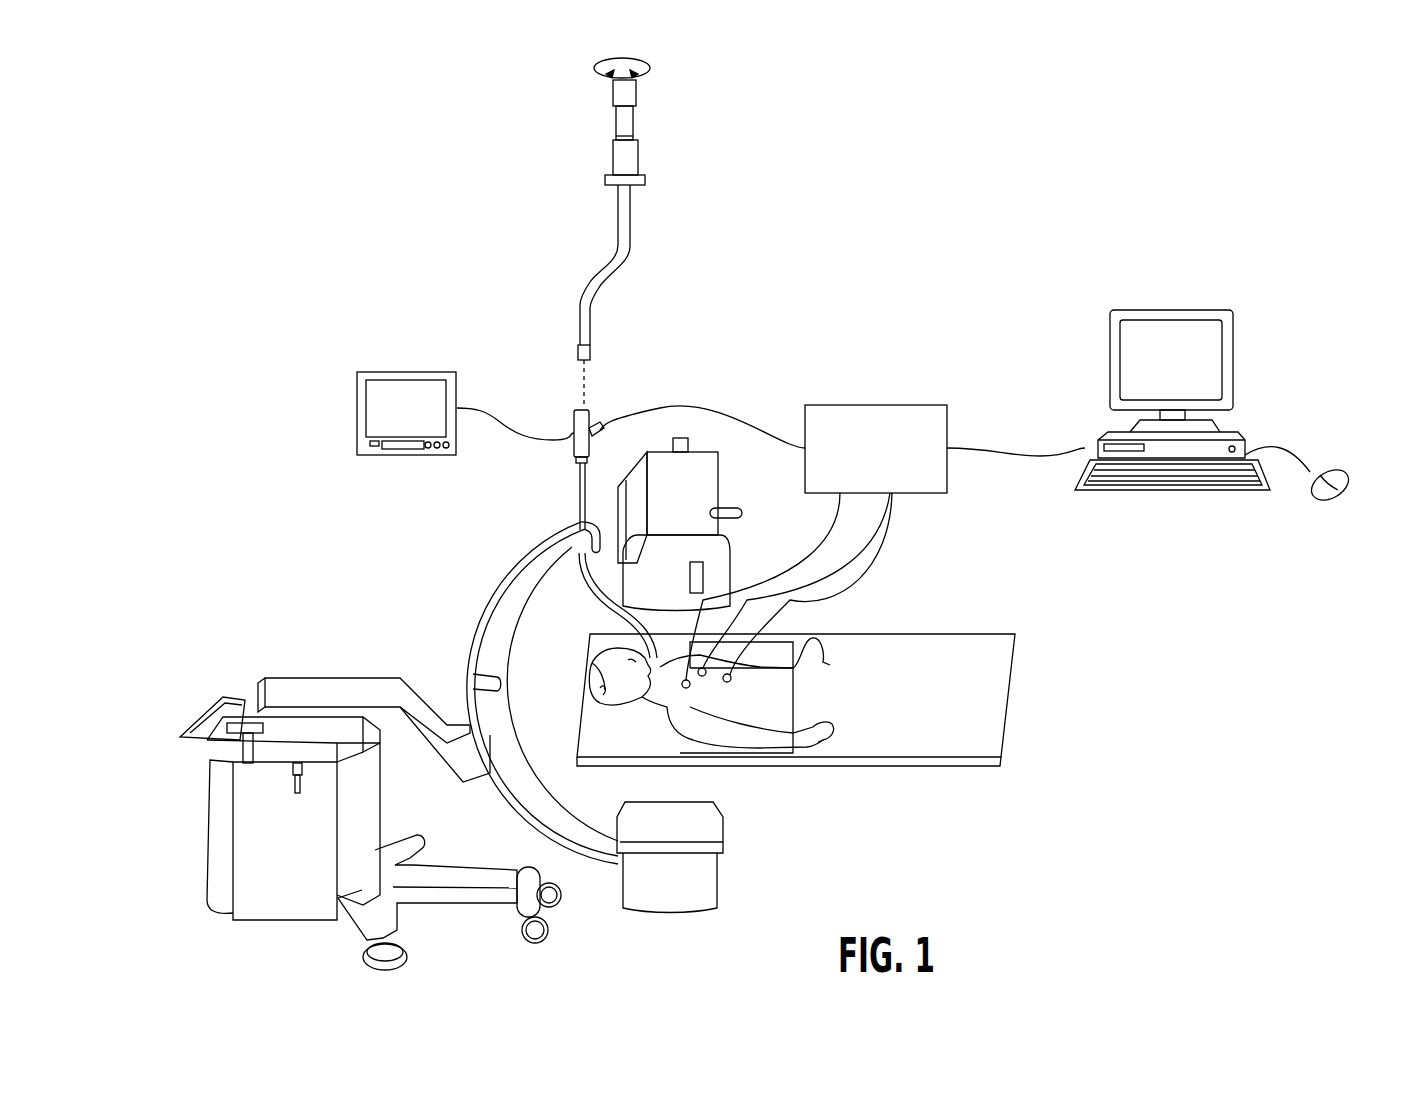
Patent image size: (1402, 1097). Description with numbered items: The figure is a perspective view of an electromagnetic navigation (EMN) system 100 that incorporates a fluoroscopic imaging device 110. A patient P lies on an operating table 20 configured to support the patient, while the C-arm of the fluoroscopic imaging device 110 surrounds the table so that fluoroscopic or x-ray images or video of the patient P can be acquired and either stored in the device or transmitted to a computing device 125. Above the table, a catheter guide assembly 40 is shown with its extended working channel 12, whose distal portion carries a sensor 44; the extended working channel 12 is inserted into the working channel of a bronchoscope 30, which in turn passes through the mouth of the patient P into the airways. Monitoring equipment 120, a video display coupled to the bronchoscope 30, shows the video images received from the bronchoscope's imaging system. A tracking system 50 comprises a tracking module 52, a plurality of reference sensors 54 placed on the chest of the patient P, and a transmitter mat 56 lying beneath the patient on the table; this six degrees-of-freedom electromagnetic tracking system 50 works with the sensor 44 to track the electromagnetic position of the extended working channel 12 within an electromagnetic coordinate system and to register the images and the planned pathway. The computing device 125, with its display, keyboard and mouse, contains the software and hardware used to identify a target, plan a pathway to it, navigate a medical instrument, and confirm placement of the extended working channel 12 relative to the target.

The electromagnetic navigation (EMN) system 100 is at (1152, 208).
The catheter guide assembly 40 is at (610, 157).
The extended working channel (EWC) 12 is at (632, 248).
The sensor 44 is at (592, 352).
The bronchoscope 30 is at (573, 490).
The monitoring equipment 120 is at (356, 410).
The tracking system 50 is at (842, 428).
The tracking module 52 is at (892, 463).
The reference sensors 54 is at (704, 678).
The transmitter mat 56 is at (717, 748).
The operating table 20 is at (627, 768).
The patient P is at (596, 676).
The fluoroscopic imaging device 110 is at (268, 640).
The computing device 125 is at (1235, 360).